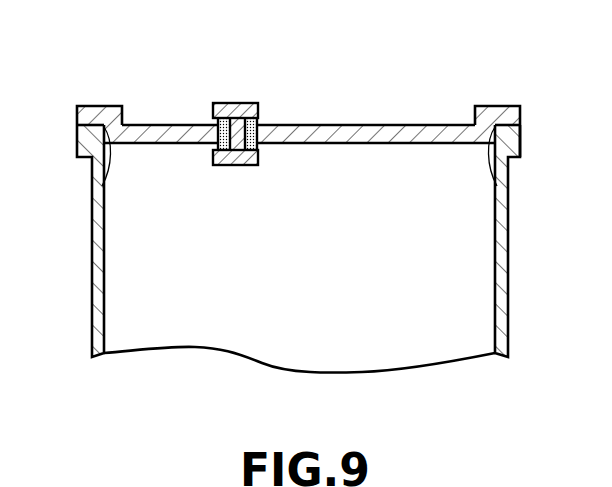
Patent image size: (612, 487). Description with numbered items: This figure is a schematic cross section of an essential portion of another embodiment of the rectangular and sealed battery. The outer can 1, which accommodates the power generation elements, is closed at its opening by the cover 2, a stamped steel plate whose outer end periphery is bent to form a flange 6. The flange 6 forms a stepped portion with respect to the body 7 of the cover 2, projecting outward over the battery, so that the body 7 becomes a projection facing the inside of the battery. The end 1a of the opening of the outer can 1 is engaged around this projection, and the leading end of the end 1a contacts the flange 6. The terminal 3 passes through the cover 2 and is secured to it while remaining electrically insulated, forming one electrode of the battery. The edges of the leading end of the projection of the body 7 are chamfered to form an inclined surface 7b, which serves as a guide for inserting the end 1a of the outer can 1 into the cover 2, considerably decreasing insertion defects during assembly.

The outer can 1 is at (332, 207).
The end of the opening of the outer can 1a is at (522, 136).
The cover 2 is at (297, 125).
The terminal 3 is at (237, 104).
The flange 6 is at (100, 106).
The body of the cover 7 is at (404, 125).
The inclined surface 7b is at (108, 183).